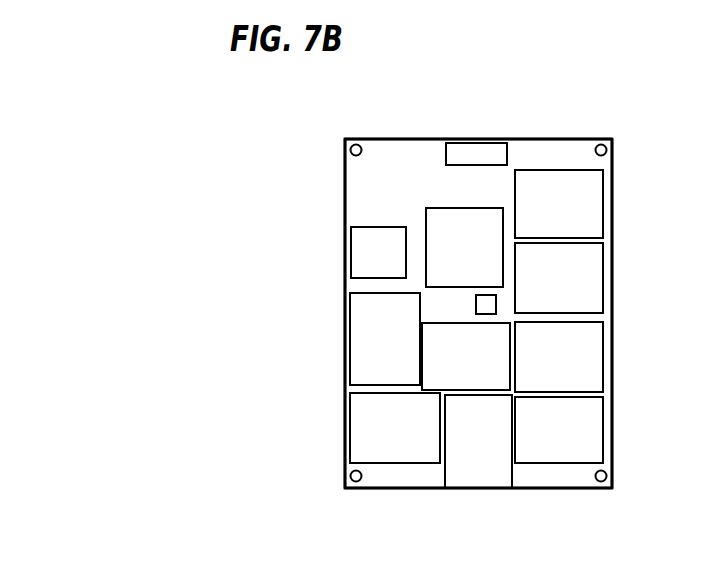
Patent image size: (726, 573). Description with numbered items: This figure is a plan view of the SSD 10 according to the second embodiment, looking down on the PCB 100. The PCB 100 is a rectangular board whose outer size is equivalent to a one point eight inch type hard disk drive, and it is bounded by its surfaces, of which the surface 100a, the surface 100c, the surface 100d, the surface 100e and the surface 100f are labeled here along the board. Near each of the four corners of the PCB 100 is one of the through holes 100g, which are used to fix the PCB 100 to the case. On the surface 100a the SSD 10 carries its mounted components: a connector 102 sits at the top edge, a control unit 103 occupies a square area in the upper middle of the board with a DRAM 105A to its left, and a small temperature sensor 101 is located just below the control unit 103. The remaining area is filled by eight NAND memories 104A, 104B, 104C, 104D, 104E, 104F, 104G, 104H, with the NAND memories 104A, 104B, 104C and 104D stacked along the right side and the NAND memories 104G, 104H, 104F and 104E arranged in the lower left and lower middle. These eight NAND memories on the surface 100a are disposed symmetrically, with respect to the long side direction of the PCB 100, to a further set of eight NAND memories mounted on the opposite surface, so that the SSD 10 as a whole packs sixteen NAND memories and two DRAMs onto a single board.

The SSD 10 is at (627, 72).
The PCB 100 is at (338, 143).
The surface 100a is at (550, 139).
The surface 100c is at (546, 489).
The surface 100d is at (613, 455).
The surface 100e is at (407, 139).
The surface 100f is at (346, 463).
The through holes 100g is at (358, 139).
The temperature sensor 101 is at (476, 300).
The connector 102 is at (457, 139).
The control unit 103 is at (445, 218).
The NAND memory 104A is at (594, 198).
The NAND memory 104B is at (594, 277).
The NAND memory 104C is at (594, 350).
The NAND memory 104D is at (594, 416).
The NAND memory 104E is at (481, 470).
The NAND memory 104F is at (353, 433).
The NAND memory 104G is at (353, 333).
The NAND memory 104H is at (420, 375).
The DRAM 105A is at (356, 250).